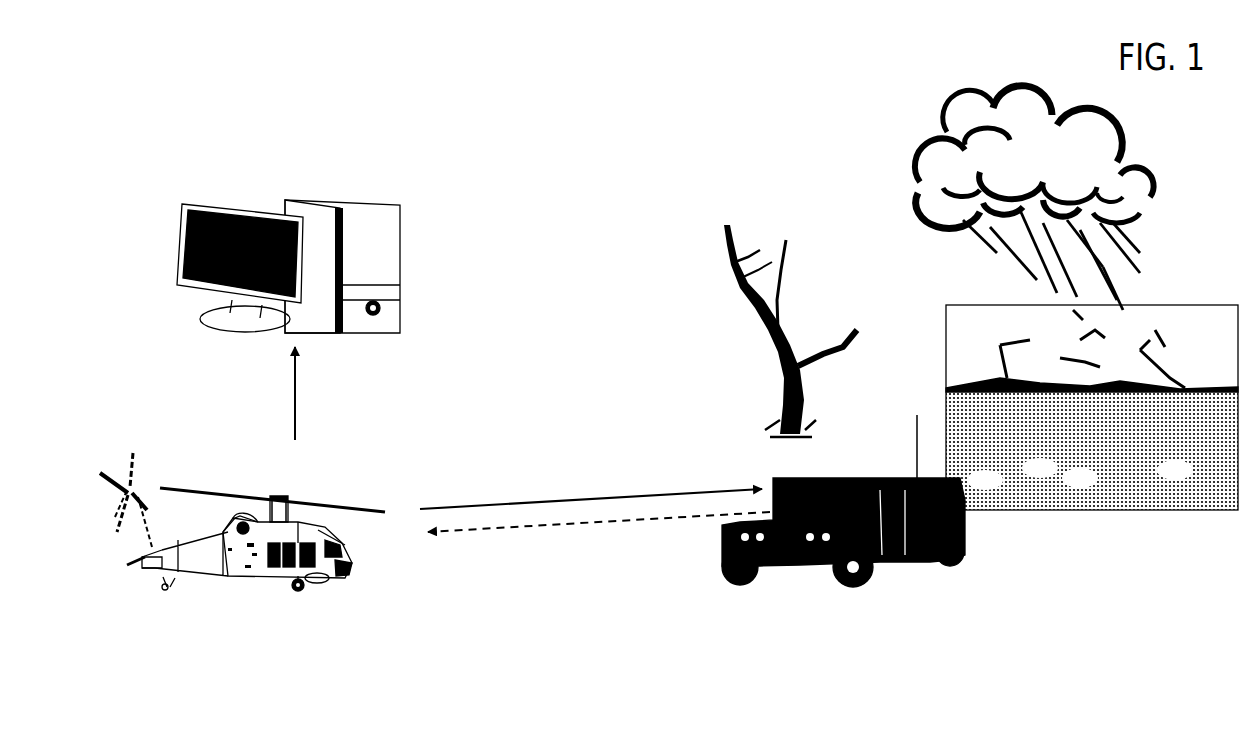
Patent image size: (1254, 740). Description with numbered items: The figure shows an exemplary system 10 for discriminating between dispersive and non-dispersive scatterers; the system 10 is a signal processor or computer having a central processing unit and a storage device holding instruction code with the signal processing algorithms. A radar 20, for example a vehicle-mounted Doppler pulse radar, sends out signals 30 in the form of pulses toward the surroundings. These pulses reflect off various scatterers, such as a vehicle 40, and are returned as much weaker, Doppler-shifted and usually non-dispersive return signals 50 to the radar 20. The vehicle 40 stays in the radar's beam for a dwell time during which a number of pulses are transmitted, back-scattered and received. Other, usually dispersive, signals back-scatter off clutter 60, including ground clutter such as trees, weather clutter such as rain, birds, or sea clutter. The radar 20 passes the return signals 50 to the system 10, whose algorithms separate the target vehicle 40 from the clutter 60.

The system 10 is at (232, 200).
The radar 20 is at (365, 622).
The signals 30 is at (560, 495).
The return signals 50 is at (608, 526).
The vehicle 40 is at (838, 592).
The clutter 60 is at (870, 110).